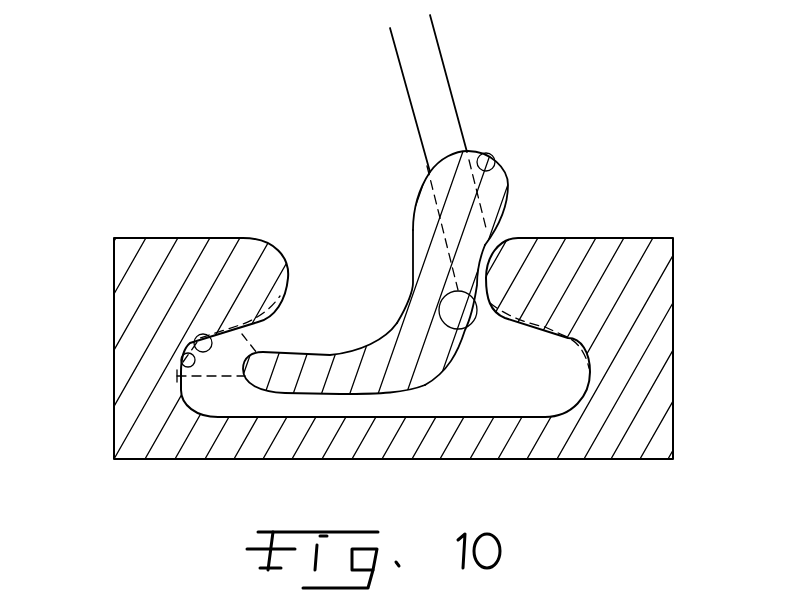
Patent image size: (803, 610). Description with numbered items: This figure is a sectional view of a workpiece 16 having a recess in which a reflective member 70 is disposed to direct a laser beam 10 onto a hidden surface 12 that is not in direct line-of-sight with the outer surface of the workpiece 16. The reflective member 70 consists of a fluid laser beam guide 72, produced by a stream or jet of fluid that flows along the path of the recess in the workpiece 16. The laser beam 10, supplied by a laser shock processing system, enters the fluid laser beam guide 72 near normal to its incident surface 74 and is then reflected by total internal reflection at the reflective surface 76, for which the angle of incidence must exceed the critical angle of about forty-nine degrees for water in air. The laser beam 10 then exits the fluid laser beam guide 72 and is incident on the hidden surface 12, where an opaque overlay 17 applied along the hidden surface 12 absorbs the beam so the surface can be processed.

The laser beam 10 is at (437, 65).
The hidden surface 12 is at (190, 345).
The workpiece 16 is at (663, 427).
The opaque overlay 17 is at (180, 368).
The reflective member 70 is at (440, 398).
The fluid laser beam guide 72 is at (327, 378).
The incident surface 74 is at (497, 163).
The reflective surface 76 is at (463, 337).